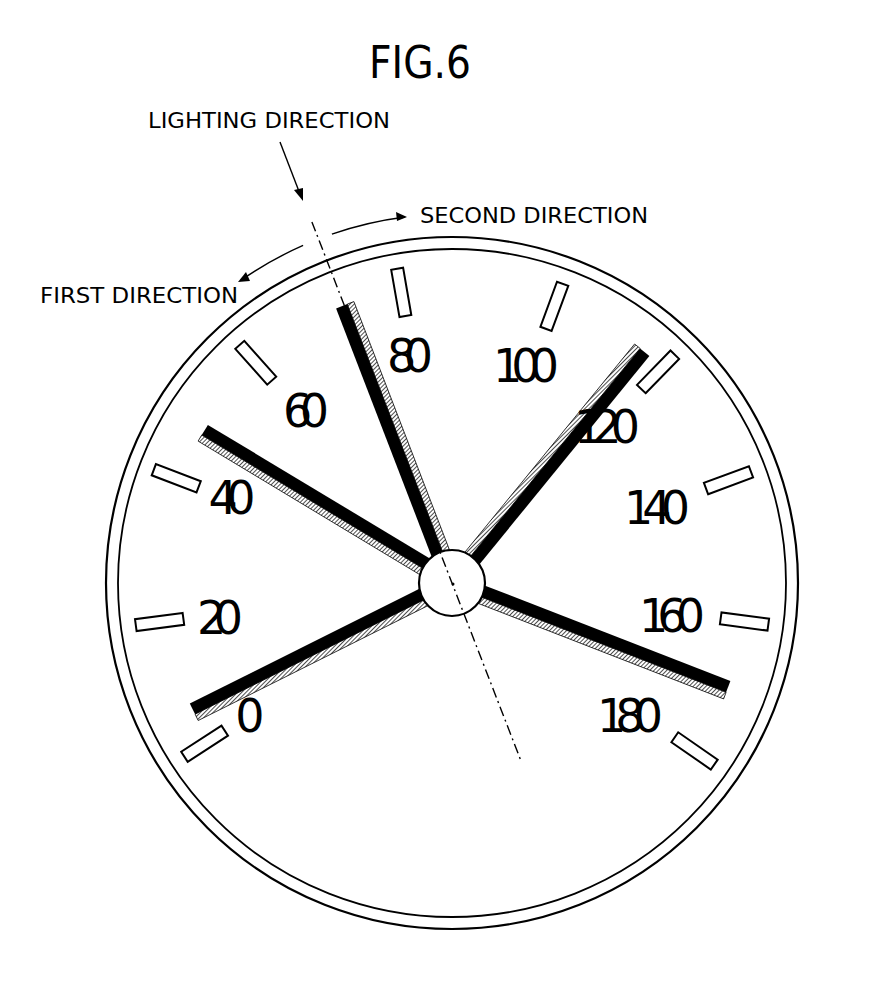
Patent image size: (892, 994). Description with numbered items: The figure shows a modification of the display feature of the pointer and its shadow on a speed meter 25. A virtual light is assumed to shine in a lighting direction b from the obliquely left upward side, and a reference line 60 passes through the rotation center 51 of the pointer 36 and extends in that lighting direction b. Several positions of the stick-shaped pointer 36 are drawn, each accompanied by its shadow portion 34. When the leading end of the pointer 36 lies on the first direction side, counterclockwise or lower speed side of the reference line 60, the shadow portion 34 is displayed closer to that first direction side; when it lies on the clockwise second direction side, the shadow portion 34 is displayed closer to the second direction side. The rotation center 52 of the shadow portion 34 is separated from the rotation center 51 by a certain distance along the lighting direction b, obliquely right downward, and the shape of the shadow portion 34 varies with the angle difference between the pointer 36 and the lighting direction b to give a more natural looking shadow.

The speed meter 25 is at (707, 345).
The shadow portion 34 is at (335, 535).
The pointer 36 is at (330, 494).
The rotation center of the pointer 51 is at (452, 583).
The rotation center of the shadow portion 52 is at (453, 586).
The reference line 60 is at (498, 722).
The lighting direction b is at (286, 158).